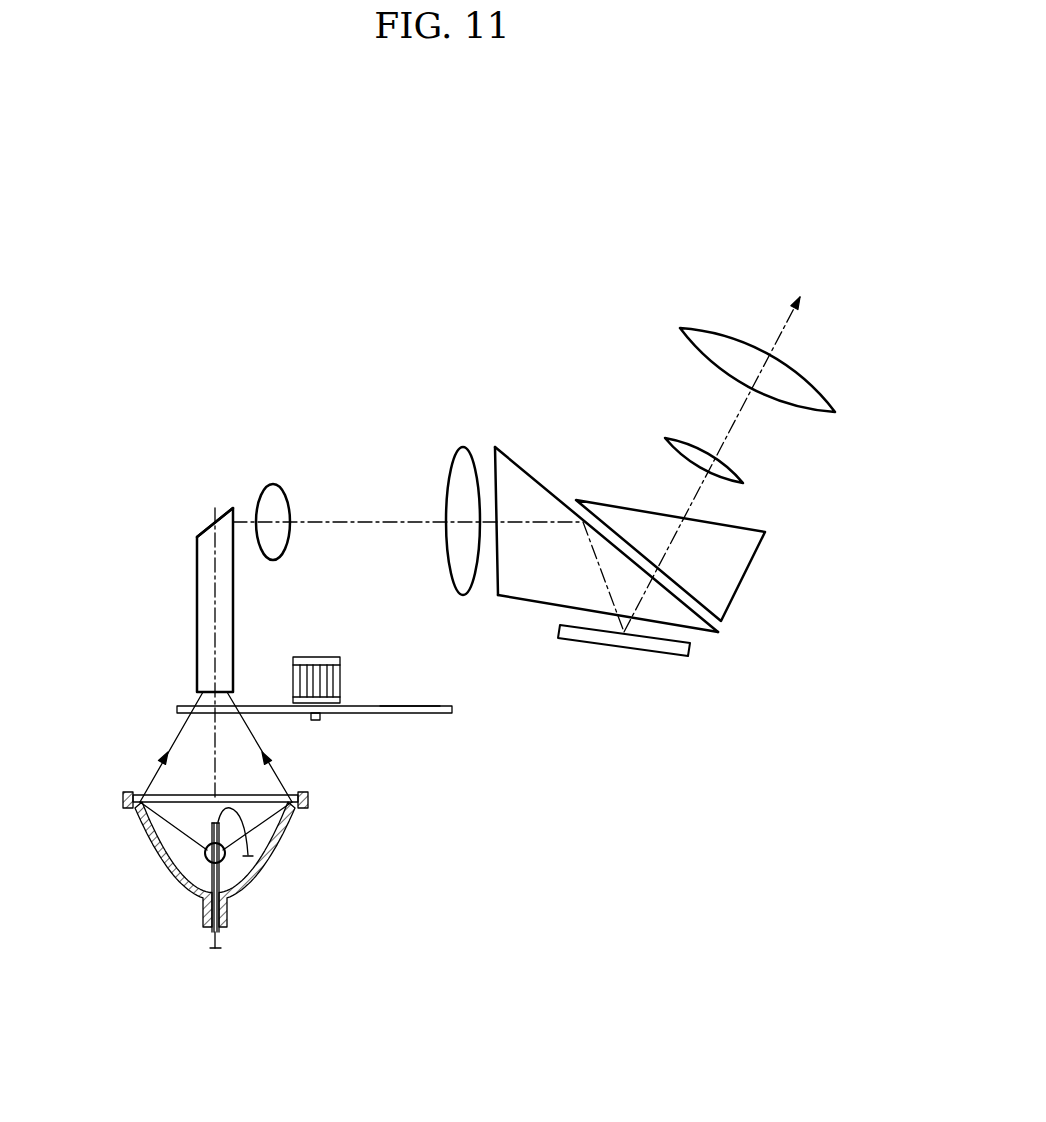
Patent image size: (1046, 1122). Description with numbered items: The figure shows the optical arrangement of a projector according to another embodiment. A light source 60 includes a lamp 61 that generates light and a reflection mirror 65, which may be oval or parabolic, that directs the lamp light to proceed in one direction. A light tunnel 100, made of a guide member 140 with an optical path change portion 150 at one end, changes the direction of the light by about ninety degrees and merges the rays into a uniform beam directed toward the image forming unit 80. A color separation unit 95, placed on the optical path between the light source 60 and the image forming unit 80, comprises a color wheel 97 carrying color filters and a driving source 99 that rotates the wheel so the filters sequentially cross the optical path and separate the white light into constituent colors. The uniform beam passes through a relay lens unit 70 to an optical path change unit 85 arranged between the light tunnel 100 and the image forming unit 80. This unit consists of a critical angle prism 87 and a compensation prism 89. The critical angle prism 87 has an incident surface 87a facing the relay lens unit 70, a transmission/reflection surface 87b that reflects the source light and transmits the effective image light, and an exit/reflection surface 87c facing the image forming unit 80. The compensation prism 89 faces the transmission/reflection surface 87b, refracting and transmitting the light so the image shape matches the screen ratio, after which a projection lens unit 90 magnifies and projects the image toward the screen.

The light tunnel 100 is at (137, 652).
The guide member 140 is at (192, 538).
The optical path change portion 150 is at (192, 508).
The relay lens unit 70 is at (463, 445).
The driving source 99 is at (316, 657).
The color wheel 97 is at (410, 706).
The color separation unit 95 is at (314, 716).
The light source 60 is at (267, 820).
The lamp 61 is at (208, 860).
The reflection mirror 65 is at (283, 858).
The optical path change unit 85 is at (666, 538).
The critical angle prism 87 is at (613, 538).
The incident surface 87a is at (496, 578).
The transmission/reflection surface 87b is at (523, 483).
The exit/reflection surface 87c is at (702, 632).
The compensation prism 89 is at (730, 578).
The image forming unit 80 is at (623, 645).
The projection lens unit 90 is at (670, 323).